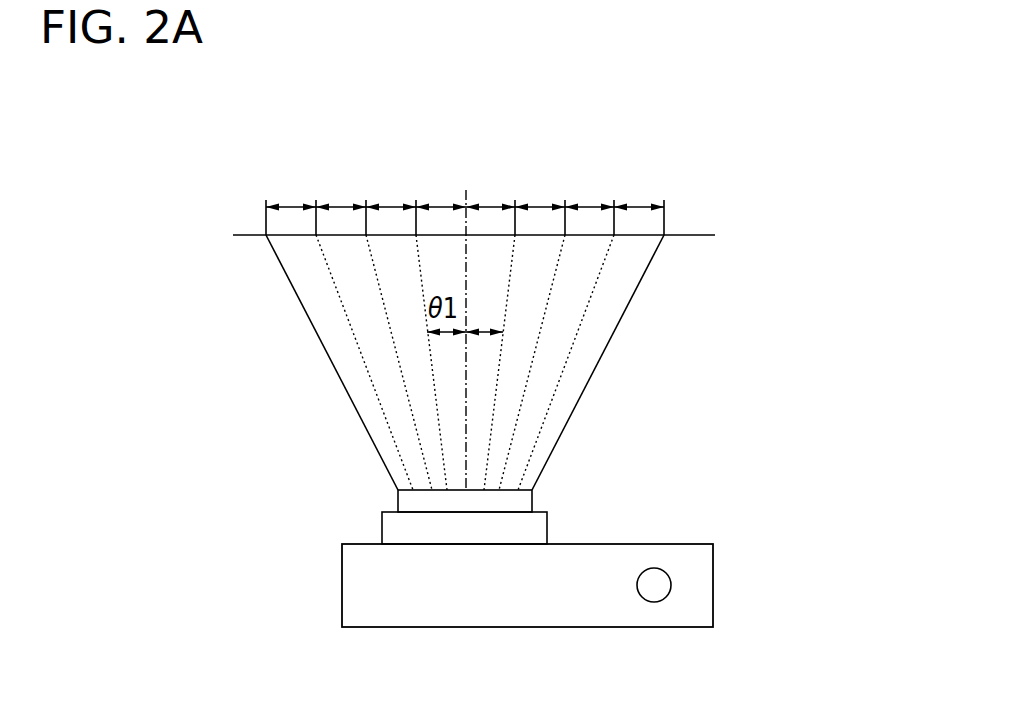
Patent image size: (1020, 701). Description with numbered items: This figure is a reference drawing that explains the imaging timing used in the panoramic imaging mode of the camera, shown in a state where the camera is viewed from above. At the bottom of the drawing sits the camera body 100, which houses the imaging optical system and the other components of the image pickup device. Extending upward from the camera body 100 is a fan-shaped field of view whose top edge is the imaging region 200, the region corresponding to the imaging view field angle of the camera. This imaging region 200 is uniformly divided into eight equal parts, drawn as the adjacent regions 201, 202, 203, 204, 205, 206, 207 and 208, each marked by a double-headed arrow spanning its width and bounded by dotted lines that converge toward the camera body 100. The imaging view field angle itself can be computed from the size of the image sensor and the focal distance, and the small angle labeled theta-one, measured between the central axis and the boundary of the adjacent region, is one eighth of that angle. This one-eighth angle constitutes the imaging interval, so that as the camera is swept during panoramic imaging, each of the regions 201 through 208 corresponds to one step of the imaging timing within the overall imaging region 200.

The camera body 100 is at (713, 582).
The imaging region 200 is at (673, 115).
The region 201 is at (291, 205).
The region 202 is at (342, 205).
The region 203 is at (388, 205).
The region 204 is at (439, 205).
The region 205 is at (489, 205).
The region 206 is at (540, 205).
The region 207 is at (587, 205).
The region 208 is at (637, 205).